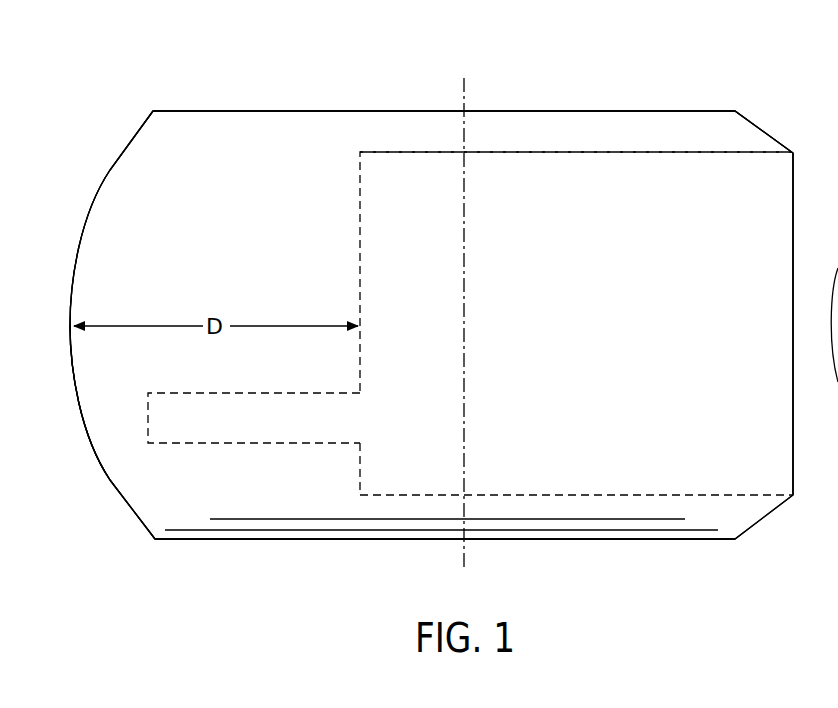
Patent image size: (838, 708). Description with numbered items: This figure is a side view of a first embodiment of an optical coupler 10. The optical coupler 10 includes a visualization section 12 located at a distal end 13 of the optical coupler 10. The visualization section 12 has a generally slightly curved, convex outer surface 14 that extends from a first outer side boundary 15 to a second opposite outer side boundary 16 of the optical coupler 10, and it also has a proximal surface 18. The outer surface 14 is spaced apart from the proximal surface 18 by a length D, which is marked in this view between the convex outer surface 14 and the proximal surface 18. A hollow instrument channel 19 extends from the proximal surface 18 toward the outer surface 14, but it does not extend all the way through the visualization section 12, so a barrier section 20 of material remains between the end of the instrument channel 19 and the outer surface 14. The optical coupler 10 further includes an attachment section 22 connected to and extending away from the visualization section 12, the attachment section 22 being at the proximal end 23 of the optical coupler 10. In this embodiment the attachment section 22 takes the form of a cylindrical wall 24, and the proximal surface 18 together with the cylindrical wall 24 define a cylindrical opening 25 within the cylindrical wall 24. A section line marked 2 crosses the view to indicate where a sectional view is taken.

The optical coupler 10 is at (604, 42).
The visualization section 12 is at (265, 146).
The distal end 13 is at (281, 559).
The outer surface 14 is at (108, 177).
The first outer side boundary 15 is at (195, 111).
The second opposite outer side boundary 16 is at (200, 540).
The proximal surface 18 is at (366, 270).
The instrument channel 19 is at (201, 410).
The barrier section 20 is at (114, 435).
The attachment section 22 is at (618, 108).
The proximal end 23 is at (788, 128).
The cylindrical wall 24 is at (533, 125).
The cylindrical opening 25 is at (744, 181).
The section line 2- 2 is at (464, 78).